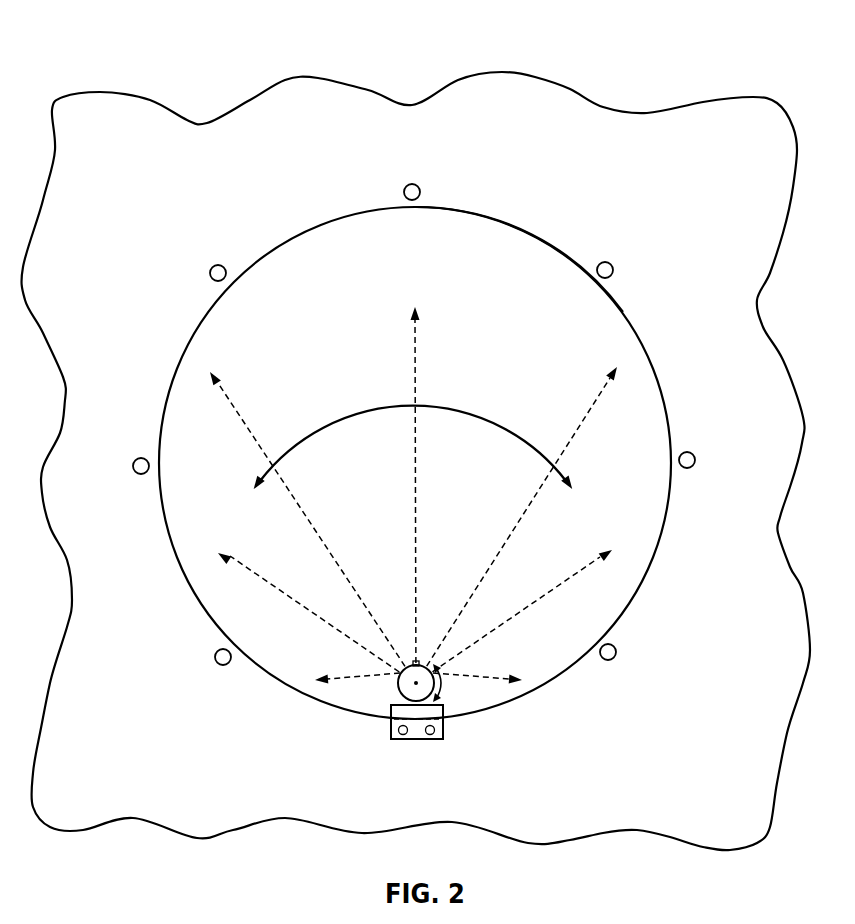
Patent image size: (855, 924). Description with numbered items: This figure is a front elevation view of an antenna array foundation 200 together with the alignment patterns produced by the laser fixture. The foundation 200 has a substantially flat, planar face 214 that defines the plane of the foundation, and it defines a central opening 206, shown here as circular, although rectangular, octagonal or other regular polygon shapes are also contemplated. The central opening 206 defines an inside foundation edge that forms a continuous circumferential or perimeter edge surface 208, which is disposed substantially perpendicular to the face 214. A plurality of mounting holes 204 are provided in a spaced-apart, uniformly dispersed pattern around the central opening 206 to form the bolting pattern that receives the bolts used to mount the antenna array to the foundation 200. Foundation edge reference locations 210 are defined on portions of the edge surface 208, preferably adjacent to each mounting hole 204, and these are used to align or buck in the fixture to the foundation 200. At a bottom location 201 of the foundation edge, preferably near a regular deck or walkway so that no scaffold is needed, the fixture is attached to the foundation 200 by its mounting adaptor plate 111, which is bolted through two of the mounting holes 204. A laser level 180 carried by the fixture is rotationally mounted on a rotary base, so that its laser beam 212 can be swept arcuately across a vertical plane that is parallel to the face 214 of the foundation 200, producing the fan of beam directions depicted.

The antenna array foundation 200 is at (210, 57).
The mounting holes 204 is at (219, 264).
The central opening 206 is at (638, 342).
The edge surface 208 is at (515, 240).
The foundation edge reference locations 210 is at (406, 217).
The laser beam 212 is at (298, 493).
The face 214 is at (545, 208).
The laser level 180 is at (401, 697).
The mounting adaptor plate 111 is at (444, 727).
The bottom location 201 is at (404, 730).